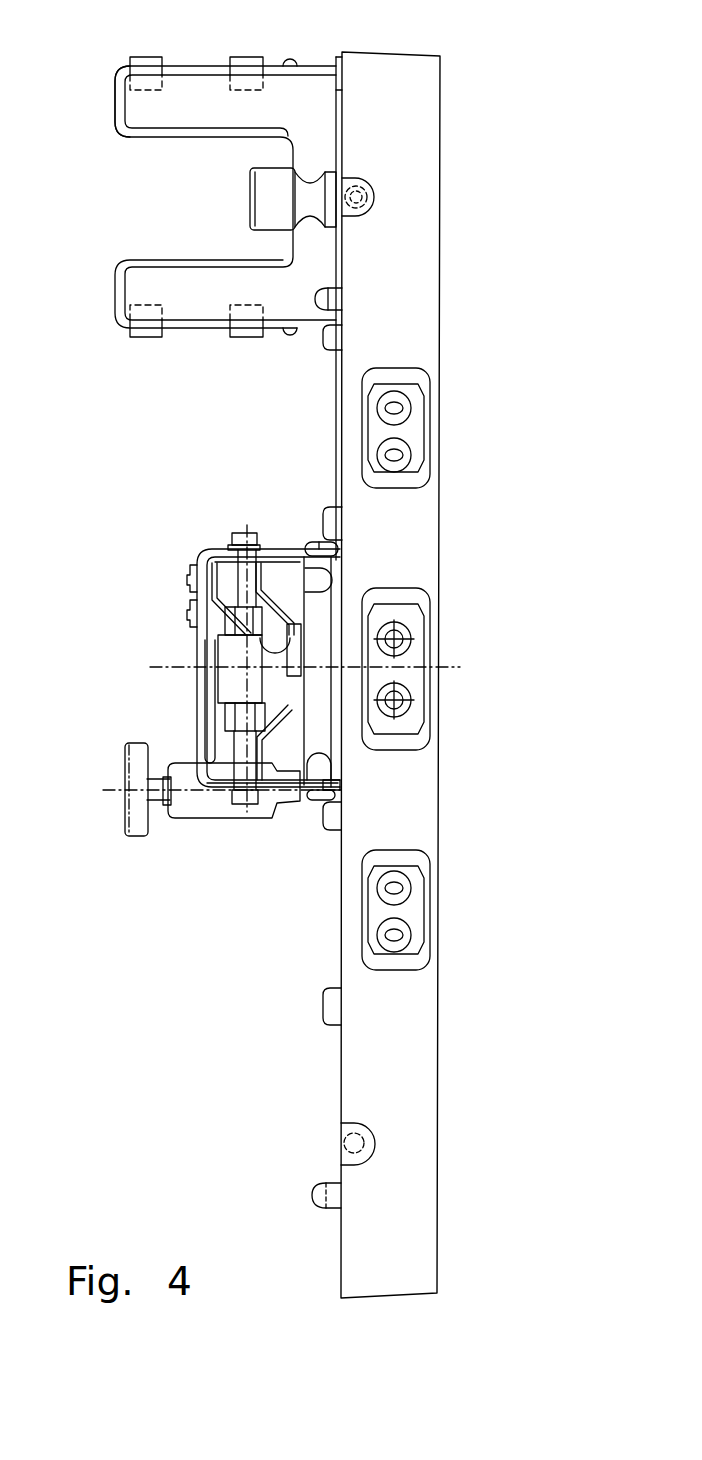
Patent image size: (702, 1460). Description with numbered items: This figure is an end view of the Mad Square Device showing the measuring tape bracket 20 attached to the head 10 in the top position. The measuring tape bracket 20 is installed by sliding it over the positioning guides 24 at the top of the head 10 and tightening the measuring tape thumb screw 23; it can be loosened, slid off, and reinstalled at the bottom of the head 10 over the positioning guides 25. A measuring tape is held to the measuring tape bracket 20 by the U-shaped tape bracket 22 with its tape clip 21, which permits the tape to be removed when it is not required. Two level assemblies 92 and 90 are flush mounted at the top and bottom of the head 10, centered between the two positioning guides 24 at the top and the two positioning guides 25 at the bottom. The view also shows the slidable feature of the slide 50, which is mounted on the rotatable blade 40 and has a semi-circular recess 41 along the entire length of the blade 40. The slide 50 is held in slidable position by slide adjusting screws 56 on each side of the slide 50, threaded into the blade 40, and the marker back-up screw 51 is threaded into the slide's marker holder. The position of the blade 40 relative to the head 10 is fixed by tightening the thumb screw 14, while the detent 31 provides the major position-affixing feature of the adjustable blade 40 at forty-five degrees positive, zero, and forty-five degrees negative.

The head 10 is at (437, 1078).
The thumb screw 14 is at (217, 658).
The measuring tape bracket 20 is at (191, 312).
The tape clip 21 is at (117, 67).
The U-shaped tape bracket 22 is at (196, 63).
The measuring tape thumb screw 23 is at (268, 187).
The positioning guides 24 is at (340, 298).
The positioning guides 25 is at (341, 1200).
The detent 31 is at (427, 902).
The blade 40 is at (303, 592).
The recess 41 is at (320, 785).
The slide 50 is at (198, 712).
The marker back-up screw 51 is at (130, 813).
The slide adjusting screws 56 is at (322, 545).
The level assembly 90 is at (338, 1148).
The level assembly 92 is at (375, 190).